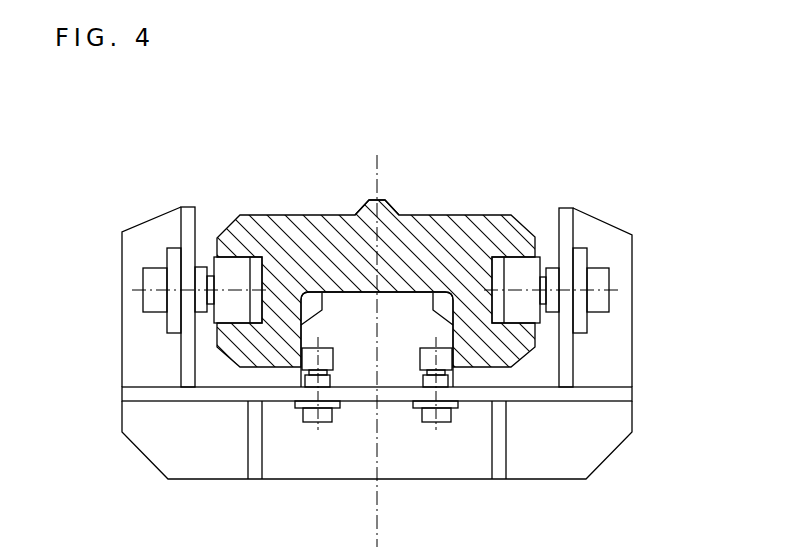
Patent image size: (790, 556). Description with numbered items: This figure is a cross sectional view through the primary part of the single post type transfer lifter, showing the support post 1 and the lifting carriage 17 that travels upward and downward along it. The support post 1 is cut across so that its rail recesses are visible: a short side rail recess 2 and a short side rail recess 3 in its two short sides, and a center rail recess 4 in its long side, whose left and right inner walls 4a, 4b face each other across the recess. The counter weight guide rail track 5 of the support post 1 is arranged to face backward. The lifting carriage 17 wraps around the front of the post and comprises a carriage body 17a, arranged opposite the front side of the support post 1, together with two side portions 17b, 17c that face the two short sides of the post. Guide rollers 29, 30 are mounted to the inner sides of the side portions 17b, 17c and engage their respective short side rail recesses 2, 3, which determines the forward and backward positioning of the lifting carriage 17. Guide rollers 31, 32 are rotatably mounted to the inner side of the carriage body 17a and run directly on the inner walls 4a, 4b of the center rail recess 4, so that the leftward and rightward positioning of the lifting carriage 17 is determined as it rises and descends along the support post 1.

The support post 1 is at (478, 213).
The short side rail recess 2 is at (495, 267).
The short side rail recess 3 is at (258, 267).
The center rail recess 4 is at (392, 303).
The inner wall of center rail recess 4a is at (433, 297).
The inner wall of center rail recess 4b is at (318, 293).
The counter weight guide rail track 5 is at (372, 200).
The lifting carriage 17 is at (642, 323).
The carriage body 17a is at (377, 464).
The side portion 17b is at (637, 297).
The side portion 17c is at (187, 353).
The guide roller 29 is at (523, 275).
The guide roller 30 is at (159, 281).
The guide roller 31 is at (428, 438).
The guide roller 32 is at (314, 435).